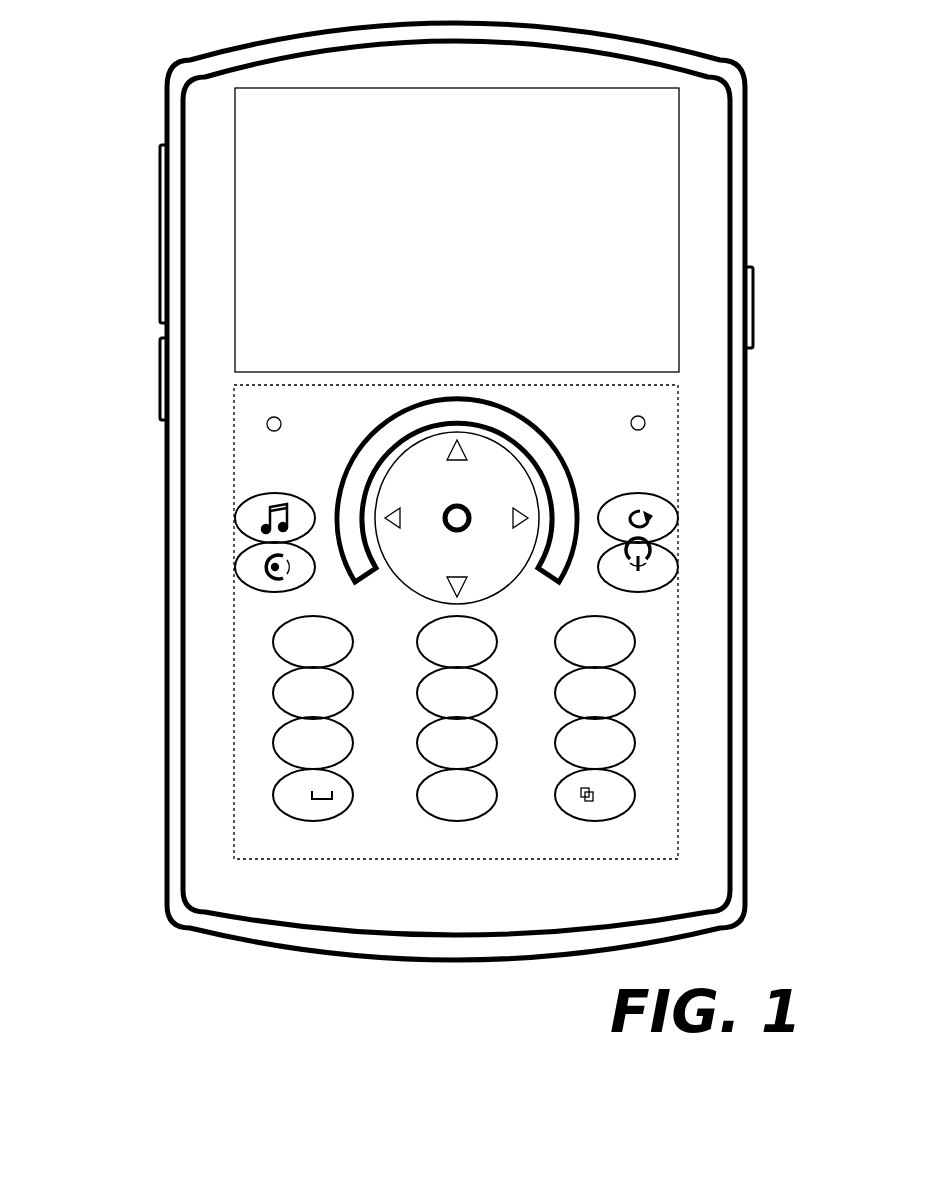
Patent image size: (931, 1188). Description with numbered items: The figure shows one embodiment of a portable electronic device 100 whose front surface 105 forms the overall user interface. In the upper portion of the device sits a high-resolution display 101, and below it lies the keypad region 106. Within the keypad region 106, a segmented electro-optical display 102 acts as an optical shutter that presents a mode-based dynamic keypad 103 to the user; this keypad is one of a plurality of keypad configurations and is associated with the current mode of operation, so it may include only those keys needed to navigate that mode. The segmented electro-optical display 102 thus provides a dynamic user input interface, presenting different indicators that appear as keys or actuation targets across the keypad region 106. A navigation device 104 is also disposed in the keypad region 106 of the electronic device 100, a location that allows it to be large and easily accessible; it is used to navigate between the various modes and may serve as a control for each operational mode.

The portable electronic device 100 is at (167, 450).
The high-resolution display 101 is at (652, 192).
The segmented electro-optical display 102 is at (463, 814).
The mode-based dynamic keypad 103 is at (256, 693).
The navigation device 104 is at (427, 473).
The front surface 105 is at (602, 833).
The keypad region 106 is at (678, 470).